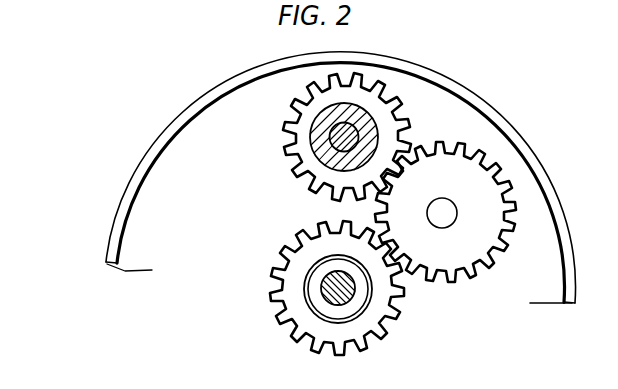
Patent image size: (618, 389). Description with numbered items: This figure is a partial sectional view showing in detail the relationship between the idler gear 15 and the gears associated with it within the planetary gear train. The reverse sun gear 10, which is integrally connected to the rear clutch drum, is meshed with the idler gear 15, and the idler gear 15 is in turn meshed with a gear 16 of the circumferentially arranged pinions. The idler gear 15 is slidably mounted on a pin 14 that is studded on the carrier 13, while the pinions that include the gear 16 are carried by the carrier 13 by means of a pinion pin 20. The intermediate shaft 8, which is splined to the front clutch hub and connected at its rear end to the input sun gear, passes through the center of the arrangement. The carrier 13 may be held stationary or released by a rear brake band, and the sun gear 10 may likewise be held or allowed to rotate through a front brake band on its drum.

The intermediate shaft 8 is at (345, 302).
The reverse sun gear 10 is at (398, 313).
The carrier 13 is at (202, 100).
The pin 14 is at (451, 217).
The idler gear 15 is at (465, 277).
The gear of the pinions 16 is at (292, 170).
The pinion pin 20 is at (329, 134).